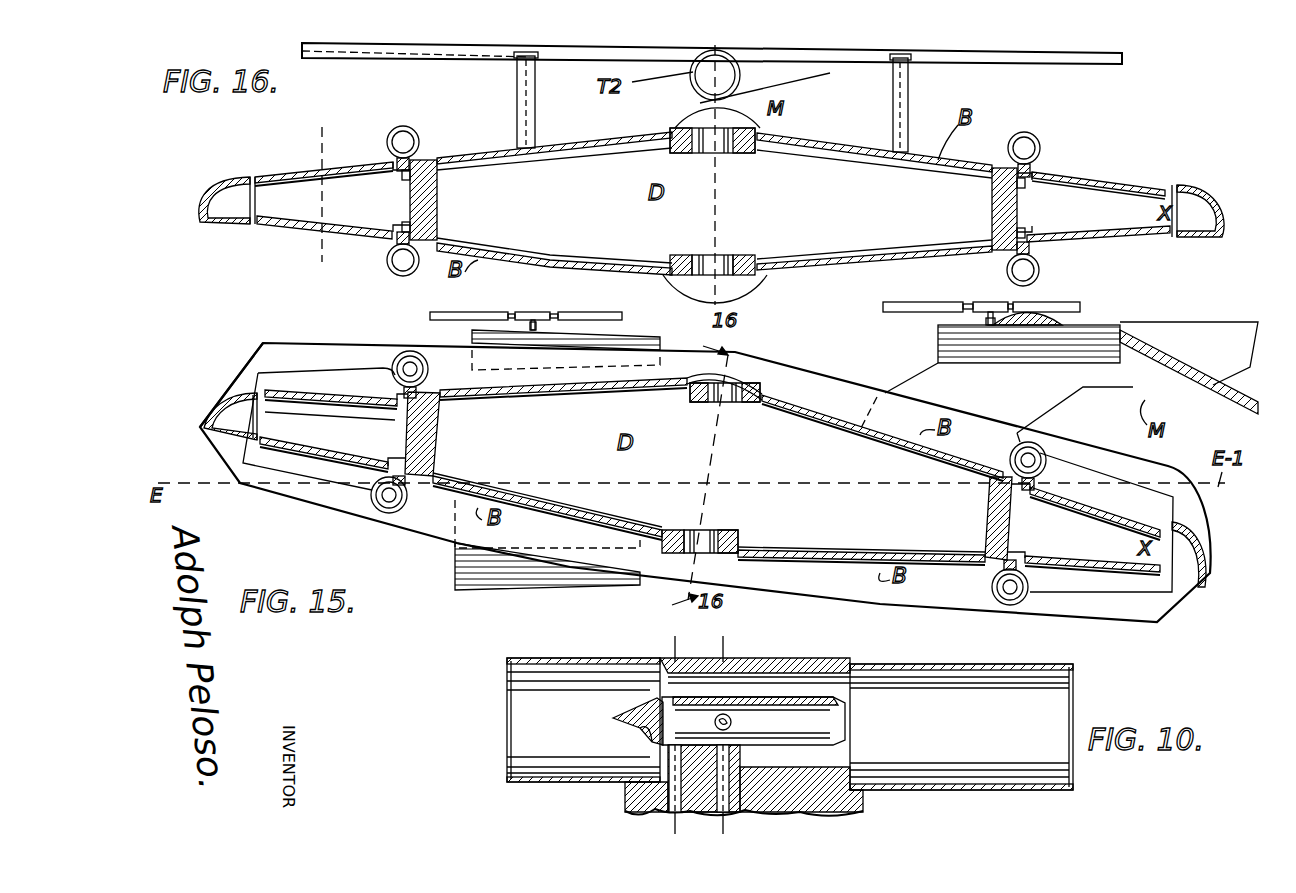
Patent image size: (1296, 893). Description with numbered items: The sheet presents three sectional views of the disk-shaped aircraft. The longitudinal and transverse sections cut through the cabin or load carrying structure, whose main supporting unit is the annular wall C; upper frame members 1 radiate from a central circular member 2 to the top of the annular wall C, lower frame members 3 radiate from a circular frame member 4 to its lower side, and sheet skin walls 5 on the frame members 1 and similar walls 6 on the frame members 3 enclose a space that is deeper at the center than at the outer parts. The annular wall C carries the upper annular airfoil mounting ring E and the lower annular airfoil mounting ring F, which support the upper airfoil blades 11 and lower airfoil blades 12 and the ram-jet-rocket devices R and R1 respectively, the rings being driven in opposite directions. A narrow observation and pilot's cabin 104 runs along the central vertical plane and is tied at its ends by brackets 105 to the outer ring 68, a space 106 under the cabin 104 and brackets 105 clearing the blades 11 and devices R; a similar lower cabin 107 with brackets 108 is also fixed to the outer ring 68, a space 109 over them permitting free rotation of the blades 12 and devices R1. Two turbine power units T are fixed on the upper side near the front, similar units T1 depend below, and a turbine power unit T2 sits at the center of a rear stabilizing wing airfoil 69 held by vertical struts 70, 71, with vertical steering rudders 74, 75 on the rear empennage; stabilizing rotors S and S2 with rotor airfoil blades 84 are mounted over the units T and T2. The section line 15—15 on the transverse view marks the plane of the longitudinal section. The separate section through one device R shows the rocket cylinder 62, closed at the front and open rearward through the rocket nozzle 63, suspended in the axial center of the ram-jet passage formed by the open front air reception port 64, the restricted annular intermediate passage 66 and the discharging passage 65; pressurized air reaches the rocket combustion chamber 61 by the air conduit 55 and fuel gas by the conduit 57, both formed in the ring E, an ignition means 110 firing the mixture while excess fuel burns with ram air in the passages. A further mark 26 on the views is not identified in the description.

In FIG. 16, the frame members 1 is at (550, 163).
In FIG. 15, the frame members 1 is at (550, 392).
In FIG. 16, the central circular member 2 is at (755, 156).
In FIG. 15, the central circular member 2 is at (742, 410).
In FIG. 16, the frame members 3 is at (578, 240).
In FIG. 15, the frame members 3 is at (583, 512).
In FIG. 16, the circular frame member 4 is at (738, 256).
In FIG. 15, the circular frame member 4 is at (718, 530).
In FIG. 10, the circular frame member 4 is at (700, 644).
In FIG. 16, the sheet skin enclosing walls 5 is at (600, 142).
In FIG. 15, the sheet skin enclosing walls 5 is at (836, 393).
In FIG. 10, the sheet skin enclosing walls 5 is at (675, 644).
In FIG. 16, the surface metal enclosing walls 6 is at (548, 268).
In FIG. 15, the surface metal enclosing walls 6 is at (800, 563).
In FIG. 16, the airfoil blades 11 is at (290, 143).
In FIG. 15, the airfoil blades 11 is at (295, 398).
In FIG. 16, the airfoil blades 12 is at (270, 232).
In FIG. 15, the airfoil blades 12 is at (272, 458).
In FIG. 16, the section line 15— 15 is at (700, 80).
In FIG. 16, the inner skin sheet 26 is at (720, 195).
In FIG. 15, the inner skin sheet 26 is at (330, 418).
In FIG. 10, the air conduits 55 is at (723, 790).
In FIG. 10, the conduits 57 is at (630, 796).
In FIG. 10, the rocket combustion chamber 61 is at (790, 722).
In FIG. 10, the rocket cylinder 62 is at (643, 705).
In FIG. 10, the rocket nozzle 63 is at (800, 740).
In FIG. 10, the open front air reception port 64 is at (533, 722).
In FIG. 10, the discharging passage 65 is at (1045, 749).
In FIG. 10, the restricted annular intermediate passage 66 is at (800, 690).
In FIG. 16, the outer ring 68 is at (215, 195).
In FIG. 15, the outer ring 68 is at (245, 388).
In FIG. 16, the rear stabilizing wing airfoil 69 is at (500, 58).
In FIG. 15, the rear stabilizing wing airfoil 69 is at (1147, 393).
In FIG. 16, the vertical strut 70 is at (540, 62).
In FIG. 15, the vertical strut 70 is at (1065, 398).
In FIG. 16, the vertical strut 71 is at (892, 90).
In FIG. 16, the vertical steering rudder 74 is at (537, 95).
In FIG. 15, the vertical steering rudder 74 is at (1202, 353).
In FIG. 16, the vertical steering rudder 75 is at (903, 140).
In FIG. 15, the rotor airfoil blades 84 is at (470, 328).
In FIG. 16, the observation and pilot's cabin 104 is at (675, 130).
In FIG. 15, the observation and pilot's cabin 104 is at (787, 405).
In FIG. 15, the brackets 105 is at (248, 390).
In FIG. 15, the space 106 is at (360, 372).
In FIG. 16, the observation and pilot's cabin 107 is at (675, 258).
In FIG. 15, the observation and pilot's cabin 107 is at (570, 512).
In FIG. 15, the brackets 108 is at (202, 432).
In FIG. 15, the space 109 is at (330, 485).
In FIG. 10, the ignition means 110 is at (658, 725).
In FIG. 16, the annular wall C is at (440, 205).
In FIG. 15, the annular wall C is at (438, 433).
In FIG. 16, the upper annular airfoil mounting ring E is at (385, 172).
In FIG. 15, the upper annular airfoil mounting ring E is at (393, 418).
In FIG. 16, the lower annular airfoil mounting ring F is at (435, 215).
In FIG. 15, the lower annular airfoil mounting ring F is at (440, 400).
In FIG. 16, the ram-jet-rocket device R is at (403, 125).
In FIG. 15, the ram-jet-rocket device R is at (388, 352).
In FIG. 16, the ram-jet-rocket device R1 is at (395, 273).
In FIG. 15, the ram-jet-rocket device R1 is at (390, 513).
In FIG. 16, the stabilizing rotor S is at (440, 315).
In FIG. 16, the stabilizing rotor S2 is at (888, 305).
In FIG. 15, the turbine power unit T is at (487, 330).
In FIG. 15, the turbine power unit T1 is at (453, 583).
In FIG. 15, the turbine power unit T2 is at (938, 343).